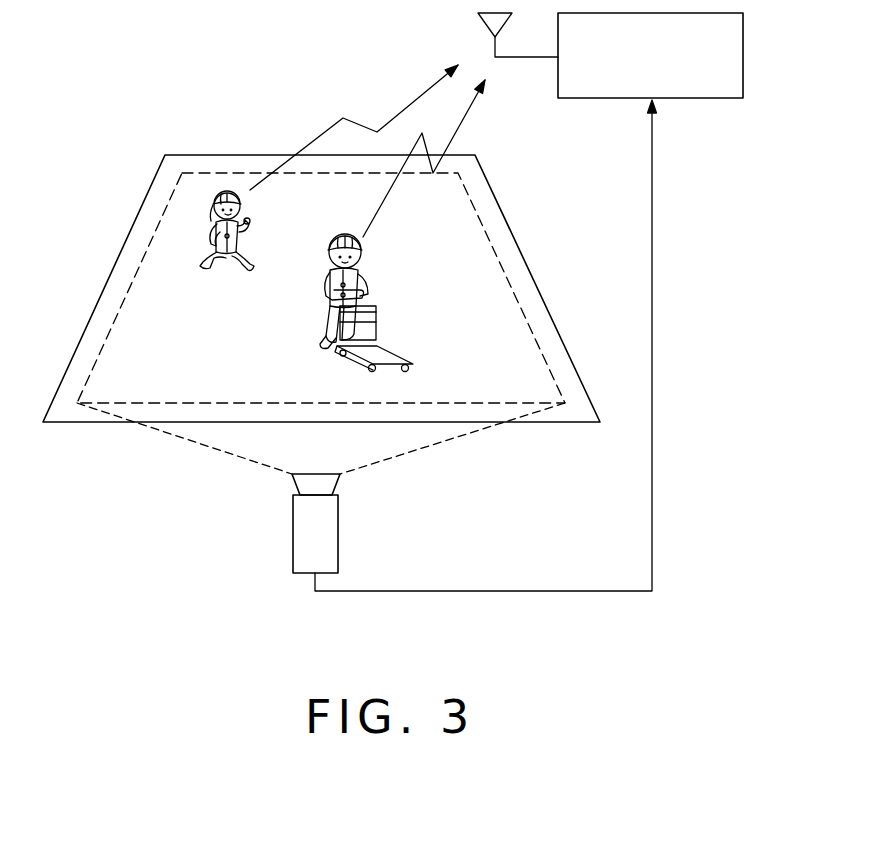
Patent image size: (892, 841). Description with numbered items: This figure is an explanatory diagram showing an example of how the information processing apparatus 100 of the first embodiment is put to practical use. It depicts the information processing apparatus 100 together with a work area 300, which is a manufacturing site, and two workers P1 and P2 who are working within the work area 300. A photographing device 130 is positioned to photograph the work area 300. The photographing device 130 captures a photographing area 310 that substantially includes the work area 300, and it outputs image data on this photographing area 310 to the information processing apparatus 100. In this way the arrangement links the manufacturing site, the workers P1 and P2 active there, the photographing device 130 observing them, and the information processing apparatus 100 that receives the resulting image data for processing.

The information processing apparatus 100 is at (743, 28).
The work area 300 is at (147, 187).
The photographing area 310 is at (140, 265).
The photographing device 130 is at (293, 536).
The worker P1 is at (240, 202).
The worker P2 is at (362, 250).